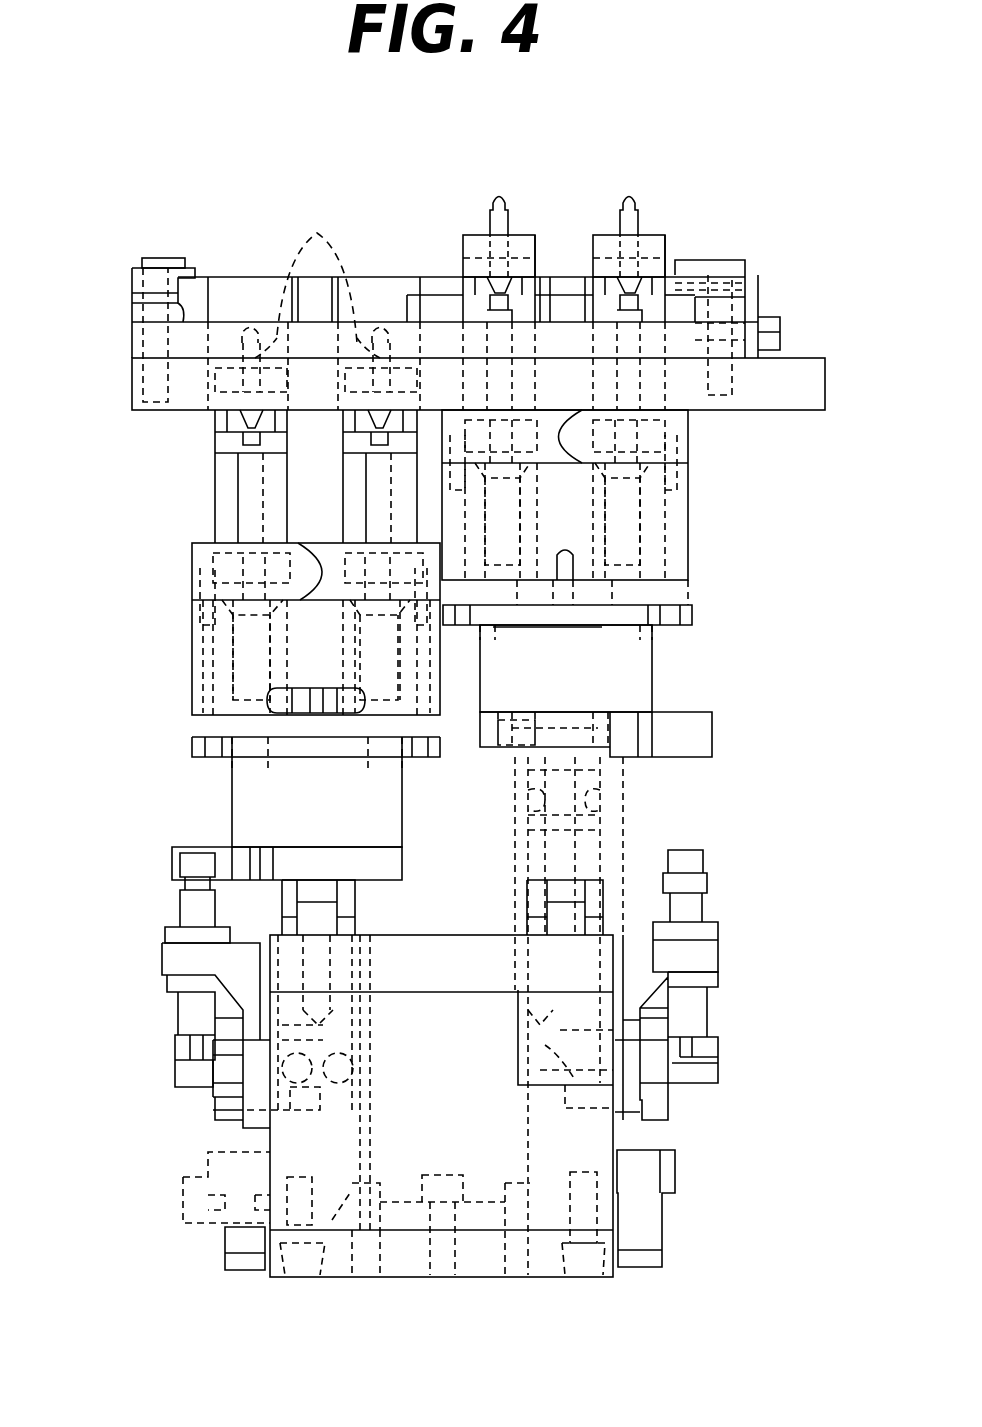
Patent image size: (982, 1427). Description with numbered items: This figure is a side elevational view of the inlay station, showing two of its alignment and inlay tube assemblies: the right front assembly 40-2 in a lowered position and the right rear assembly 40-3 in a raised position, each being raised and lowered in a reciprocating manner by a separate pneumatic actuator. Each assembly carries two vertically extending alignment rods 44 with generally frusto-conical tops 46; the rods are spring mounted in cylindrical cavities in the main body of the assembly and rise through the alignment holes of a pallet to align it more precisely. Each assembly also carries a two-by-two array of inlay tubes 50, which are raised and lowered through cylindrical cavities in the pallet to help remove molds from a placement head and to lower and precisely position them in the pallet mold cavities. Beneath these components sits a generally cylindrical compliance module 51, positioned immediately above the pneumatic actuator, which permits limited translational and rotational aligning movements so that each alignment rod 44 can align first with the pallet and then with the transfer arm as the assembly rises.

The alignment rod 44 is at (617, 223).
The frusto-conical top 46 is at (500, 193).
The inlay tube 50 is at (537, 255).
The right front assembly 40-2 is at (192, 648).
The right rear assembly 40-3 is at (688, 518).
The compliance module 51 is at (333, 817).